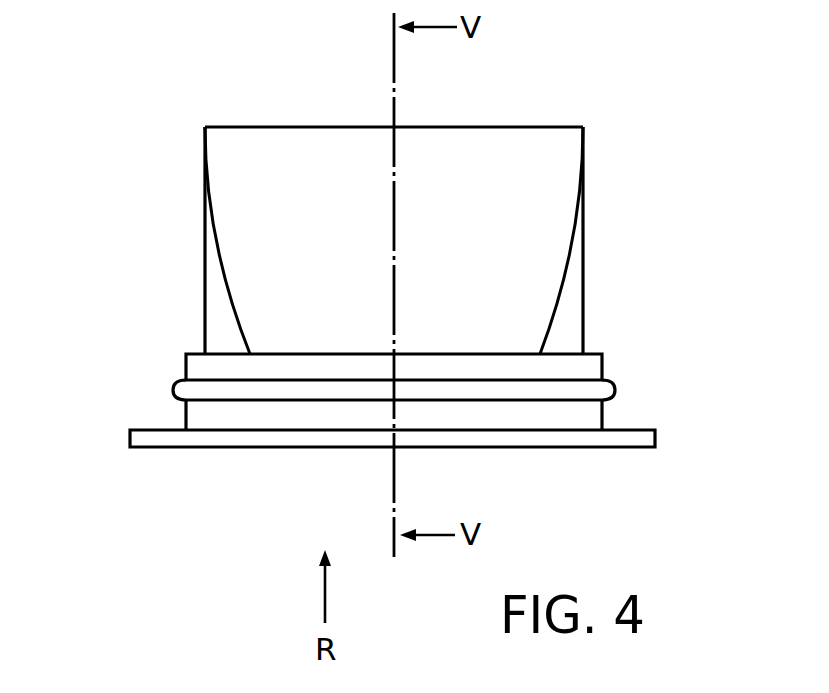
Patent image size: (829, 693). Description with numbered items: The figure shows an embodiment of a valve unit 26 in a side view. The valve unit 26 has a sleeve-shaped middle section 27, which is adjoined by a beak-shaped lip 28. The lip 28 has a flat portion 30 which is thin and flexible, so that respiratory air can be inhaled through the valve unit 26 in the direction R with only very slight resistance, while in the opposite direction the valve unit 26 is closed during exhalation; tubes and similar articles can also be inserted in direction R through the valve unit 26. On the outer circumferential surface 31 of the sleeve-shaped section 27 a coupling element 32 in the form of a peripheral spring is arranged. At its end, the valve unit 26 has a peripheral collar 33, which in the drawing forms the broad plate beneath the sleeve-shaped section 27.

The valve unit 26 is at (631, 124).
The sleeve-shaped middle section 27 is at (186, 362).
The beak-shaped lip 28 is at (292, 175).
The flat portion 30 is at (490, 127).
The outer circumferential surface 31 is at (162, 412).
The coupling element 32 is at (621, 383).
The peripheral collar 33 is at (157, 451).